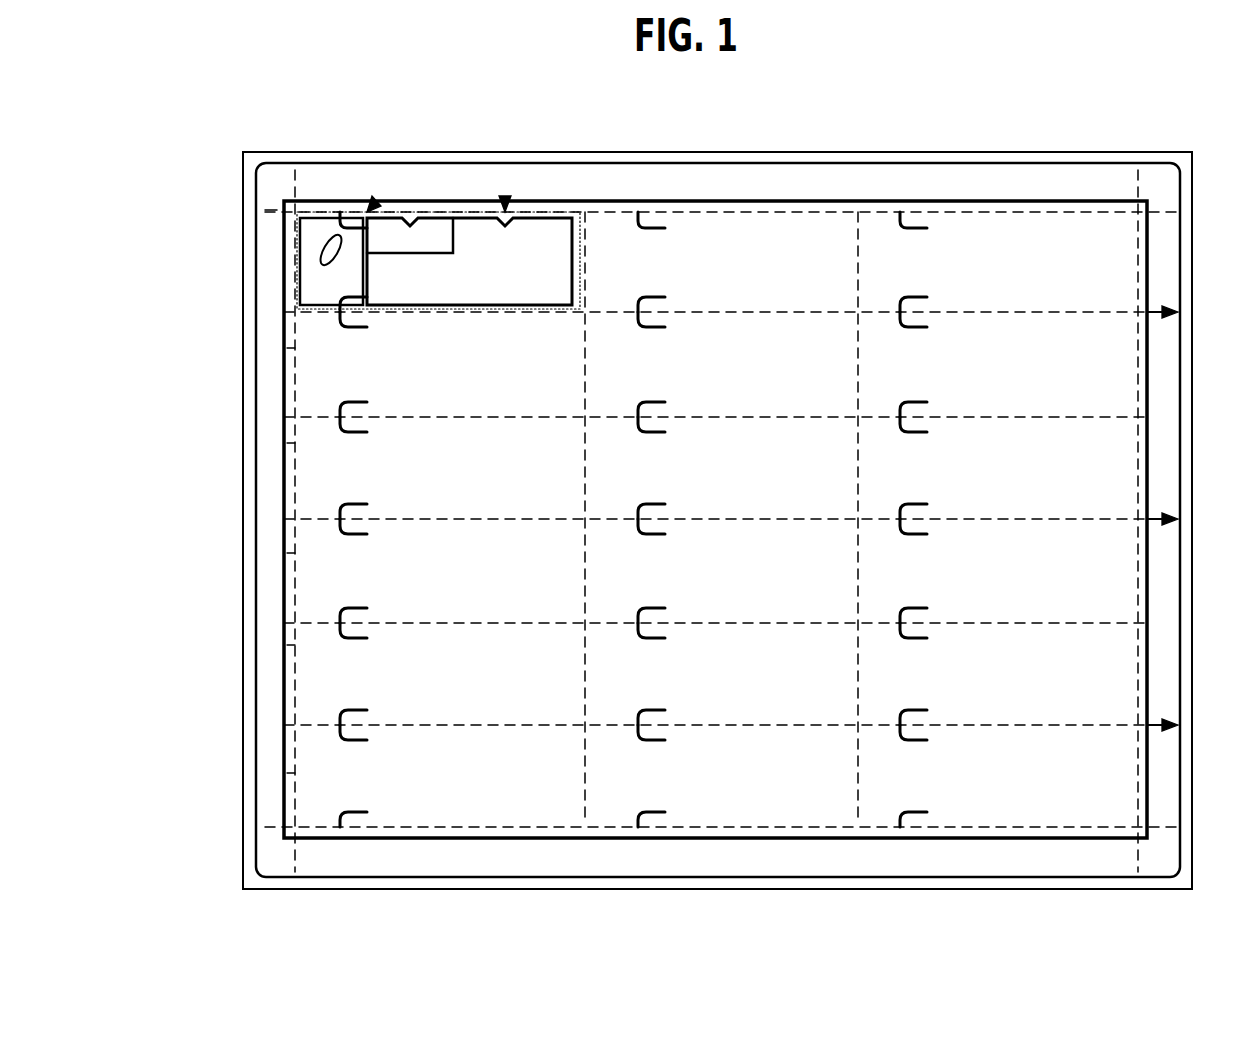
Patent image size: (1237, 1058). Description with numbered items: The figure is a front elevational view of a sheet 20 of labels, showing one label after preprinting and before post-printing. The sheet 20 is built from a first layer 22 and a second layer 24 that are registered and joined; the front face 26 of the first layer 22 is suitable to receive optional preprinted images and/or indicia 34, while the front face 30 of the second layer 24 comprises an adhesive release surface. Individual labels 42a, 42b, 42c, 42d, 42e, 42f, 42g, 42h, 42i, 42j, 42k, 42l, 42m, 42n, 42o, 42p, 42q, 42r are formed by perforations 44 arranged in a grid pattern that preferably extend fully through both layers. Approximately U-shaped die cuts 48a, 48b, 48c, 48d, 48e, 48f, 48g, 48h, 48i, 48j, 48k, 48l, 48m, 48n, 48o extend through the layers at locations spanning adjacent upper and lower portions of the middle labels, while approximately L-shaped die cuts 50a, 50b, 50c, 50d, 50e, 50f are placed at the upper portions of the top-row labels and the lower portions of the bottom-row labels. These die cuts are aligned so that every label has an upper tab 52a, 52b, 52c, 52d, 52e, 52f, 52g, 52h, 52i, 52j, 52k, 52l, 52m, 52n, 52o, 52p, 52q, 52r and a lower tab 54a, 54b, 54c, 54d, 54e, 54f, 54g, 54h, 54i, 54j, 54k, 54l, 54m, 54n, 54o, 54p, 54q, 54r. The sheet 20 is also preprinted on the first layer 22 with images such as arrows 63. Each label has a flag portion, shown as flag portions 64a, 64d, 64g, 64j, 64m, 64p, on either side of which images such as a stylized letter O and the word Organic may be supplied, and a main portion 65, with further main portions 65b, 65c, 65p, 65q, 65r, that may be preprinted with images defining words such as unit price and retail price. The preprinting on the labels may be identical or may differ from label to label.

The sheet 20 is at (947, 120).
The first layer 22 is at (1120, 175).
The second layer 24 is at (1163, 148).
The front face of first layer 26 is at (462, 172).
The front face of second layer 30 is at (1010, 155).
The preprinted indicia 34 is at (505, 200).
The perforations 44 is at (272, 208).
The arrows 63 is at (1158, 308).
The label 42a is at (328, 216).
The label 42b is at (738, 245).
The label 42c is at (1040, 215).
The label 42d is at (317, 365).
The label 42e is at (778, 384).
The label 42f is at (1049, 379).
The label 42g is at (392, 480).
The label 42h is at (777, 491).
The label 42i is at (1046, 482).
The label 42j is at (317, 590).
The label 42k is at (776, 587).
The label 42l is at (1046, 580).
The label 42m is at (343, 675).
The label 42n is at (777, 682).
The label 42o is at (1037, 679).
The label 42p is at (475, 800).
The label 42q is at (765, 797).
The label 42r is at (1065, 790).
The die cut 48a is at (340, 318).
The die cut 48b is at (638, 303).
The die cut 48c is at (900, 303).
The die cut 48d is at (340, 409).
The die cut 48e is at (658, 402).
The die cut 48f is at (915, 402).
The die cut 48g is at (340, 521).
The die cut 48h is at (658, 504).
The die cut 48i is at (915, 504).
The die cut 48j is at (358, 608).
The die cut 48k is at (656, 608).
The die cut 48l is at (915, 608).
The die cut 48m is at (362, 712).
The die cut 48n is at (656, 710).
The die cut 48o is at (915, 710).
The die cut 50a is at (352, 212).
The die cut 50b is at (668, 212).
The die cut 50c is at (923, 212).
The die cut 50d is at (352, 824).
The die cut 50e is at (648, 824).
The die cut 50f is at (905, 824).
The upper tab 52a is at (358, 212).
The upper tab 52b is at (660, 222).
The upper tab 52c is at (922, 222).
The upper tab 52d is at (370, 323).
The upper tab 52e is at (660, 322).
The upper tab 52f is at (922, 322).
The upper tab 52g is at (368, 425).
The upper tab 52h is at (660, 424).
The upper tab 52i is at (922, 424).
The upper tab 52j is at (368, 527).
The upper tab 52k is at (660, 527).
The upper tab 52l is at (922, 527).
The upper tab 52m is at (368, 631).
The upper tab 52n is at (660, 630).
The upper tab 52o is at (922, 630).
The upper tab 52p is at (368, 733).
The upper tab 52q is at (660, 732).
The upper tab 52r is at (922, 732).
The lower tab 54a is at (362, 305).
The lower tab 54b is at (658, 305).
The lower tab 54c is at (920, 305).
The lower tab 54d is at (365, 410).
The lower tab 54e is at (658, 411).
The lower tab 54f is at (920, 410).
The lower tab 54g is at (360, 513).
The lower tab 54h is at (658, 515).
The lower tab 54i is at (915, 513).
The lower tab 54j is at (360, 616).
The lower tab 54k is at (658, 616).
The lower tab 54l is at (920, 616).
The lower tab 54m is at (360, 718).
The lower tab 54n is at (658, 718).
The lower tab 54o is at (920, 718).
The lower tab 54p is at (362, 820).
The lower tab 54q is at (665, 815).
The lower tab 54r is at (922, 815).
The flag portion 64a is at (290, 252).
The flag portion 64d is at (290, 346).
The flag portion 64g is at (293, 443).
The flag portion 64j is at (293, 553).
The flag portion 64m is at (292, 645).
The flag portion 64p is at (292, 773).
The main portion 65 is at (433, 240).
The main portion 65b is at (795, 245).
The main portion 65c is at (1083, 215).
The main portion 65p is at (555, 800).
The main portion 65q is at (833, 808).
The main portion 65r is at (1013, 815).